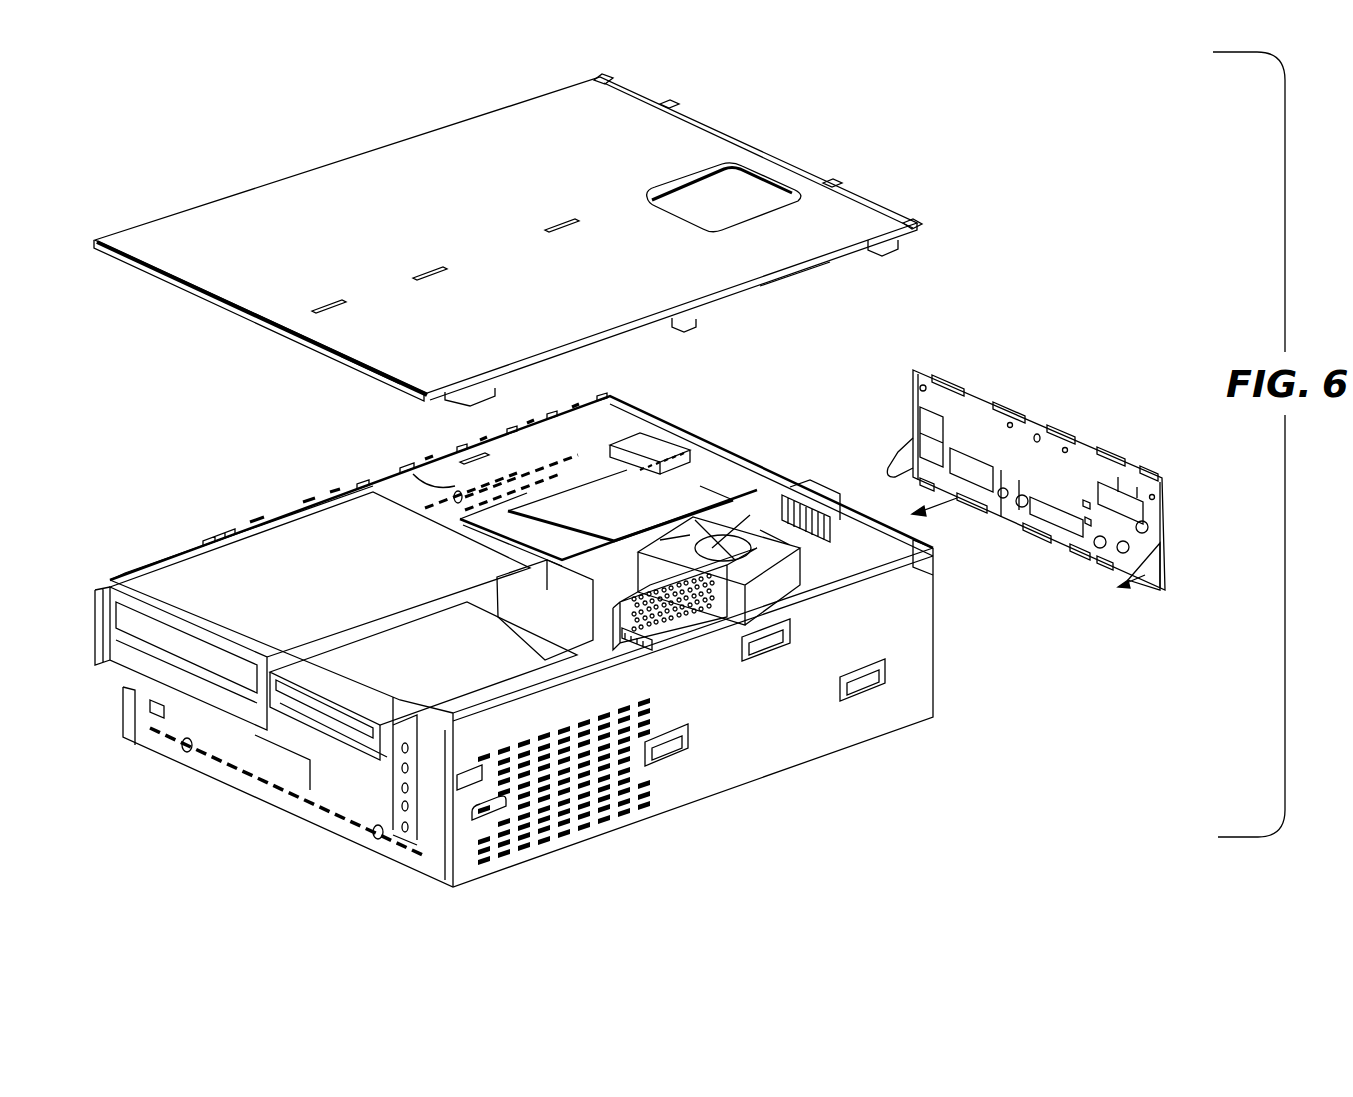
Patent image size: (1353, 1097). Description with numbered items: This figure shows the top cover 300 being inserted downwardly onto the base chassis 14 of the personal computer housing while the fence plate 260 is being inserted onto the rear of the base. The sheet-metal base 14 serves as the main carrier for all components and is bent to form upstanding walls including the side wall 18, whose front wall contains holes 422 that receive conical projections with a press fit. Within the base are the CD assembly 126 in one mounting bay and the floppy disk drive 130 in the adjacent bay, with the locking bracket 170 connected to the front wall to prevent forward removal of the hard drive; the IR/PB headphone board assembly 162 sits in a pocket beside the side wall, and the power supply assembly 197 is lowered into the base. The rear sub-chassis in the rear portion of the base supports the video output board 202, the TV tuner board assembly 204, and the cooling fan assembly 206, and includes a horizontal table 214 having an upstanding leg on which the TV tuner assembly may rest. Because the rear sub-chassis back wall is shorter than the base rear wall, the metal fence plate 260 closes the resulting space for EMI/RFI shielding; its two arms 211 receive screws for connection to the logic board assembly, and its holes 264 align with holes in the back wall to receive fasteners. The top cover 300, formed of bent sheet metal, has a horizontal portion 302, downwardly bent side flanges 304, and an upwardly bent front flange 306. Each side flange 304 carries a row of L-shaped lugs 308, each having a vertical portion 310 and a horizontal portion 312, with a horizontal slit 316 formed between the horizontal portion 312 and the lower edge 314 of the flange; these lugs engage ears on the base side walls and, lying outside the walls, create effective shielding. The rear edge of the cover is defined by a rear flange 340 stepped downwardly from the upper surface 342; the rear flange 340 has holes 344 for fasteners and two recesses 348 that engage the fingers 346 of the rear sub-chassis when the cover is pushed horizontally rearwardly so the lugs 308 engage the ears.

The base chassis 14 is at (862, 752).
The side wall 18 is at (918, 674).
The CD assembly 126 is at (162, 574).
The floppy disk drive 130 is at (300, 740).
The IR/PB headphone board assembly 162 is at (428, 852).
The locking bracket 170 is at (338, 790).
The power supply assembly 197 is at (748, 590).
The video output board 202 is at (598, 455).
The TV tuner board assembly 204 is at (742, 470).
The cooling fan assembly 206 is at (788, 496).
The arms 211 is at (893, 460).
The horizontal table 214 is at (409, 464).
The fence plate 260 is at (998, 392).
The holes 264 is at (912, 372).
The top cover 300 is at (740, 132).
The horizontal portion 302 is at (553, 320).
The side flanges 304 is at (805, 270).
The front flange 306 is at (388, 385).
The L-shaped lugs 308 is at (698, 320).
The vertical portion 310 is at (488, 384).
The horizontal portion 312 is at (478, 394).
The lower edge 314 is at (638, 327).
The horizontal slit 316 is at (512, 382).
The rear flange 340 is at (916, 225).
The upper surface 342 is at (865, 212).
The holes 344 is at (606, 74).
The fingers 346 is at (717, 343).
The recesses 348 is at (672, 104).
The holes 422 is at (182, 752).